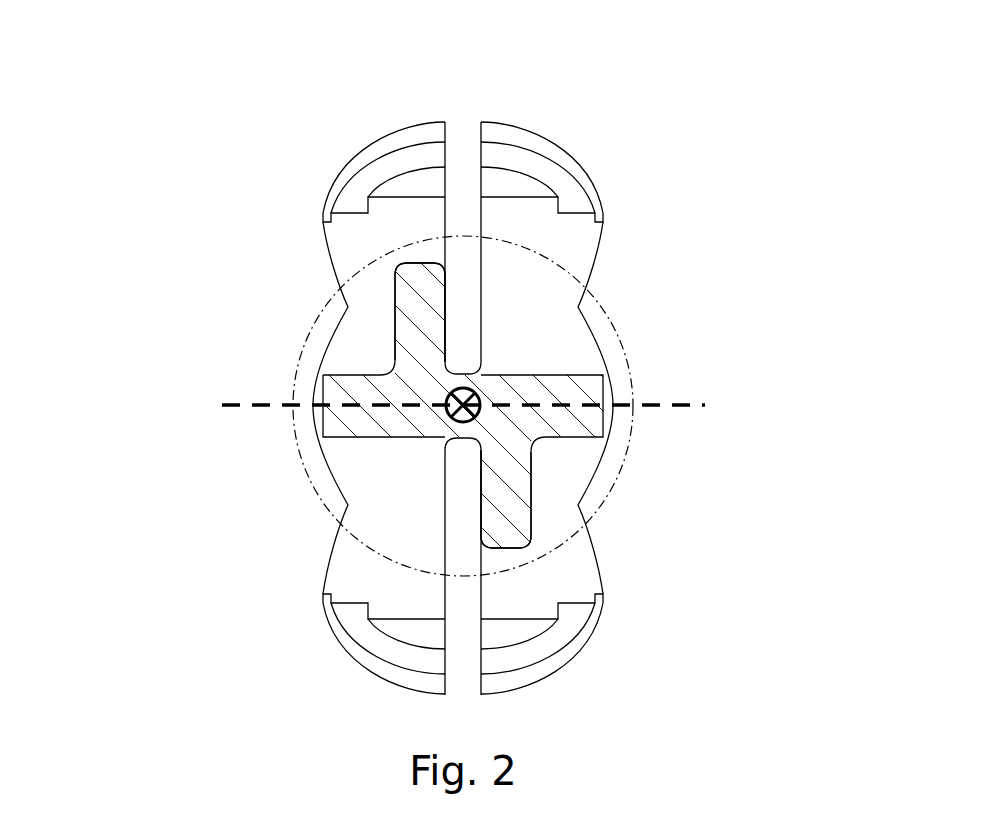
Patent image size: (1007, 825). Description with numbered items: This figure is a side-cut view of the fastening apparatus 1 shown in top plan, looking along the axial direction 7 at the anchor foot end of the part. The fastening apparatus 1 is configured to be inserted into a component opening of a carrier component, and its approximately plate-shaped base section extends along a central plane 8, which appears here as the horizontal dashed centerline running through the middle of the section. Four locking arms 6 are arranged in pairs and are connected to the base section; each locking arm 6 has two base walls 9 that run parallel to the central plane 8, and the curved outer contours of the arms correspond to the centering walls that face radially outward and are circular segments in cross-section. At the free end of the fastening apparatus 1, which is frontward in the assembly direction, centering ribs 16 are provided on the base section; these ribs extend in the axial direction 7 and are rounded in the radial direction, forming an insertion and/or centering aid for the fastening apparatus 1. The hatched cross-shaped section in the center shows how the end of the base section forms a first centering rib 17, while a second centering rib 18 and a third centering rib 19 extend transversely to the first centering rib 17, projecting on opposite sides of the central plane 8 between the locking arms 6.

The fastening apparatus 1 is at (130, 113).
The locking arms 6 is at (343, 262).
The axial direction 7 is at (477, 397).
The central plane 8 is at (226, 405).
The base walls 9 is at (355, 237).
The centering ribs 16 is at (655, 347).
The first centering rib 17 is at (590, 416).
The second centering rib 18 is at (427, 283).
The third centering rib 19 is at (490, 540).